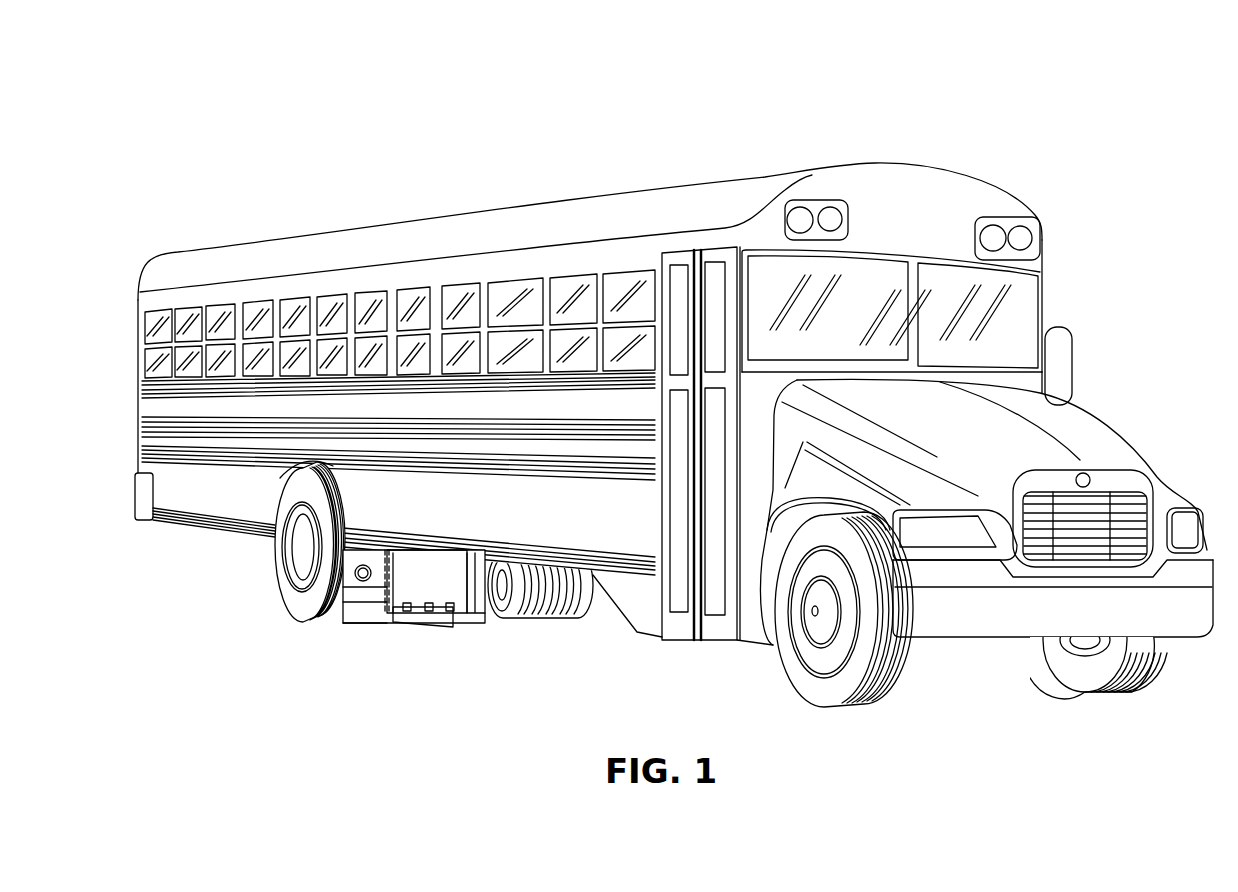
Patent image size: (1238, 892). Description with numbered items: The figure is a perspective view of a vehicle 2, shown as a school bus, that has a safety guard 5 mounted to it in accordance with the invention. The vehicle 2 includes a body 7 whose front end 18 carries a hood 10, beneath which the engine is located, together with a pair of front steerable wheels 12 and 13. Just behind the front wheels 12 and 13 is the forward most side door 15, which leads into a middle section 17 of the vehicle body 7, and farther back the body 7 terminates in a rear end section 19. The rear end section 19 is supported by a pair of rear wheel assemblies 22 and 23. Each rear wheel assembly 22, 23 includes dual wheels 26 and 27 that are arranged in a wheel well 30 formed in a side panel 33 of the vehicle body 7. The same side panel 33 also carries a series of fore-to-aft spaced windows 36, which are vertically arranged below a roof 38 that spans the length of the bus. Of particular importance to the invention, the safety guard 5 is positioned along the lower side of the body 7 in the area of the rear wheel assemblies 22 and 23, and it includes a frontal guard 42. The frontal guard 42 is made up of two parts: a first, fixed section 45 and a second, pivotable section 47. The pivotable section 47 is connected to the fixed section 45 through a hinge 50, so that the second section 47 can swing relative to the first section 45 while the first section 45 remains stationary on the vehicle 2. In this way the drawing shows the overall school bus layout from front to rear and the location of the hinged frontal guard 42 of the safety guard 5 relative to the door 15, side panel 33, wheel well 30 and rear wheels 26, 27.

The vehicle 2 is at (1110, 146).
The safety guard 5 is at (401, 652).
The body 7 is at (195, 496).
The hood 10 is at (1130, 460).
The front steerable wheel 12 is at (873, 708).
The front steerable wheel 13 is at (1137, 690).
The side door 15 is at (683, 607).
The middle section 17 is at (425, 450).
The front end 18 is at (1142, 408).
The rear end section 19 is at (150, 439).
The rear wheel assembly 22 is at (276, 600).
The rear wheel assembly 23 is at (557, 628).
The dual wheel 26 is at (275, 545).
The dual wheel 27 is at (360, 617).
The wheel well 30 is at (317, 462).
The side panel 33 is at (554, 524).
The window 36 is at (293, 305).
The roof 38 is at (478, 212).
The frontal guard 42 is at (434, 640).
The first, fixed section 45 is at (367, 602).
The second, pivotable section 47 is at (440, 583).
The hinge 50 is at (387, 540).